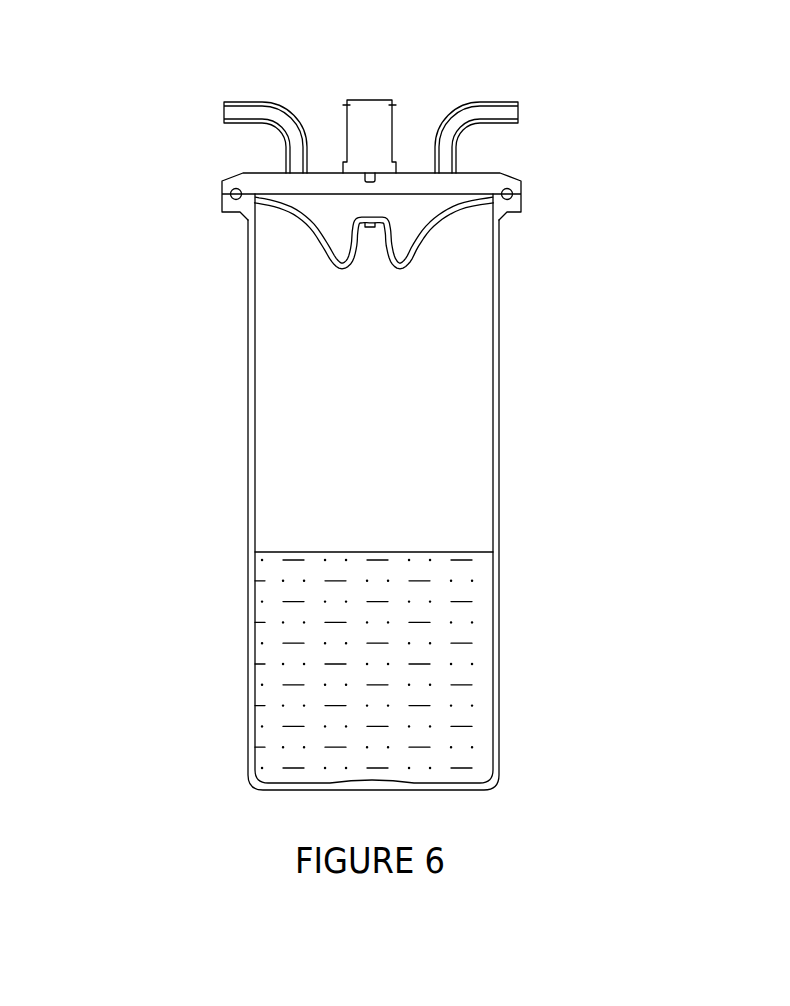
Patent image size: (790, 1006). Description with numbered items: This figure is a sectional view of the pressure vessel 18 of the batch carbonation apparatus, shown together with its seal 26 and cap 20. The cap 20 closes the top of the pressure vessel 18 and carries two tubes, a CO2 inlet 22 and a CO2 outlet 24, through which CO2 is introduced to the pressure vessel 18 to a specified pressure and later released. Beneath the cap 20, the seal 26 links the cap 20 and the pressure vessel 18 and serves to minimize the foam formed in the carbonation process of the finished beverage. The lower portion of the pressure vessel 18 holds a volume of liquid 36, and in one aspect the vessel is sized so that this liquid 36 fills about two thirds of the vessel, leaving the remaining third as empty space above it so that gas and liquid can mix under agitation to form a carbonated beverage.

The pressure vessel 18 is at (536, 330).
The cap 20 is at (228, 170).
The CO2 inlet 22 is at (259, 70).
The CO2 outlet 24 is at (512, 73).
The seal 26 is at (476, 216).
The liquid 36 is at (445, 592).